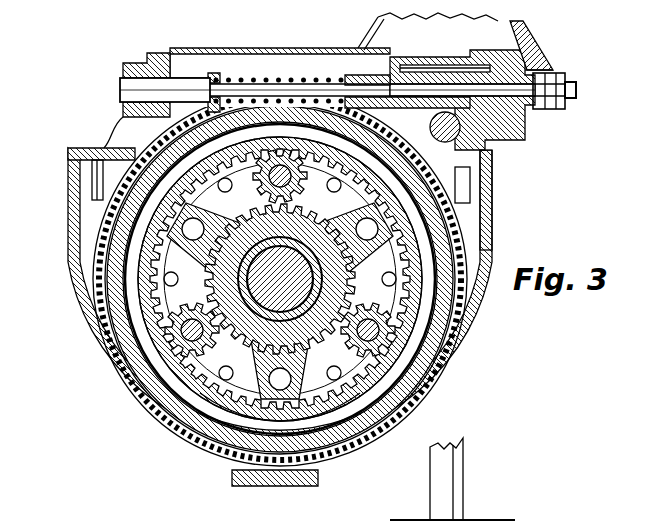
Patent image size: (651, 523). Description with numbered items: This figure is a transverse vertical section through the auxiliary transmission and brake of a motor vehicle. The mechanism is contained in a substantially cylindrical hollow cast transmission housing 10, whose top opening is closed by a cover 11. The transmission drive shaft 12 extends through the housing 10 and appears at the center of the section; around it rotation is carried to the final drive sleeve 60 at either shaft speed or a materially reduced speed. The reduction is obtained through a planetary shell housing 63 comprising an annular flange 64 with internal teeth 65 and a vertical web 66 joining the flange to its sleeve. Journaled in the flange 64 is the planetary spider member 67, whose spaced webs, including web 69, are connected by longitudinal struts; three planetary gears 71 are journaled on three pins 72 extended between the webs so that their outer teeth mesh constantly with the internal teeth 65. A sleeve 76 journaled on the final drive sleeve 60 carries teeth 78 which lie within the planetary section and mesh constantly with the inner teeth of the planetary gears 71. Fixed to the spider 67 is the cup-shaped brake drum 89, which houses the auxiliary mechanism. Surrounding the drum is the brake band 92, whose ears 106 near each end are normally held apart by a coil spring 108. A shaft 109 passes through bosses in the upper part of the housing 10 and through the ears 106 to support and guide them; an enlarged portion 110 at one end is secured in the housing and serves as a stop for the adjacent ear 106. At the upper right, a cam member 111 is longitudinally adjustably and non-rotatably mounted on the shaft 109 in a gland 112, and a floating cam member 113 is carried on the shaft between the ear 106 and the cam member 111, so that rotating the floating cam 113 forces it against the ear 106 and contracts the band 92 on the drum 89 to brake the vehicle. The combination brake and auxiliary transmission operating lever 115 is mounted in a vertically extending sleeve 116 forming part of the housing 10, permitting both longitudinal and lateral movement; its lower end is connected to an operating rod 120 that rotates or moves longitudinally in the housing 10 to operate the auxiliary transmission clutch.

The transmission housing 10 is at (82, 350).
The cover 11 is at (183, 48).
The transmission drive shaft 12 is at (292, 264).
The final drive sleeve 60 is at (258, 214).
The planetary shell housing 63 is at (236, 150).
The annular flange 64 is at (277, 412).
The internal teeth 65 is at (320, 405).
The vertical web 66 is at (323, 160).
The planetary spider member 67 is at (186, 395).
The web 69 is at (254, 176).
The planetary gear 71 is at (352, 357).
The pin 72 is at (199, 341).
The sleeve 76 is at (214, 290).
The teeth 78 is at (252, 386).
The brake drum 89 is at (140, 377).
The brake band 92 is at (450, 362).
The ear 106 is at (216, 75).
The coil spring 108 is at (282, 80).
The shaft 109 is at (253, 88).
The enlarged portion 110 is at (118, 90).
The cam member 111 is at (517, 98).
The gland 112 is at (520, 70).
The floating cam member 113 is at (442, 80).
The combination brake and auxiliary transmission operating lever 115 is at (450, 476).
The vertically extending sleeve 116 is at (446, 81).
The operating rod 120 is at (488, 162).